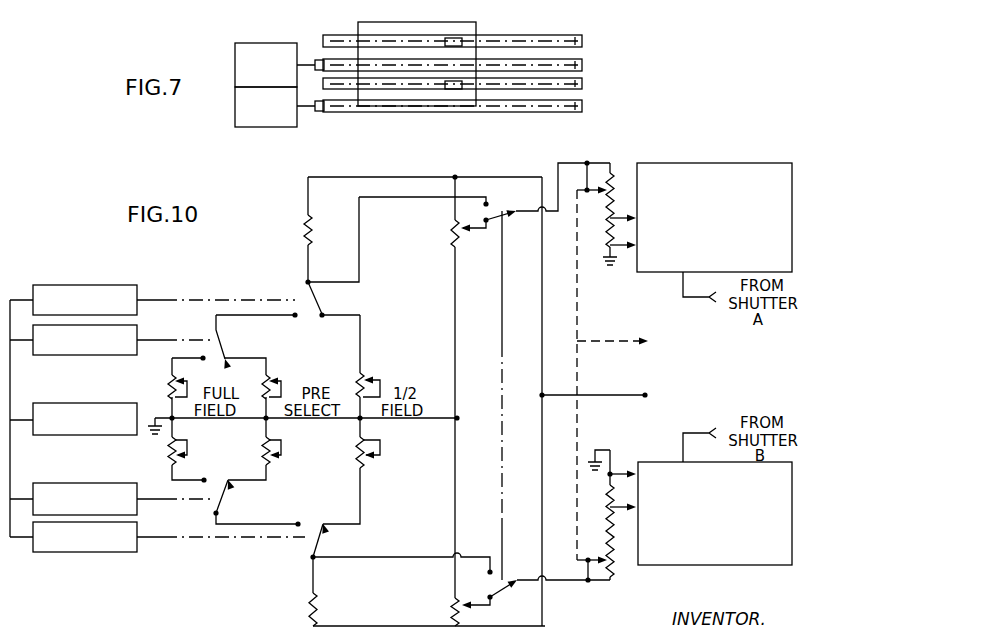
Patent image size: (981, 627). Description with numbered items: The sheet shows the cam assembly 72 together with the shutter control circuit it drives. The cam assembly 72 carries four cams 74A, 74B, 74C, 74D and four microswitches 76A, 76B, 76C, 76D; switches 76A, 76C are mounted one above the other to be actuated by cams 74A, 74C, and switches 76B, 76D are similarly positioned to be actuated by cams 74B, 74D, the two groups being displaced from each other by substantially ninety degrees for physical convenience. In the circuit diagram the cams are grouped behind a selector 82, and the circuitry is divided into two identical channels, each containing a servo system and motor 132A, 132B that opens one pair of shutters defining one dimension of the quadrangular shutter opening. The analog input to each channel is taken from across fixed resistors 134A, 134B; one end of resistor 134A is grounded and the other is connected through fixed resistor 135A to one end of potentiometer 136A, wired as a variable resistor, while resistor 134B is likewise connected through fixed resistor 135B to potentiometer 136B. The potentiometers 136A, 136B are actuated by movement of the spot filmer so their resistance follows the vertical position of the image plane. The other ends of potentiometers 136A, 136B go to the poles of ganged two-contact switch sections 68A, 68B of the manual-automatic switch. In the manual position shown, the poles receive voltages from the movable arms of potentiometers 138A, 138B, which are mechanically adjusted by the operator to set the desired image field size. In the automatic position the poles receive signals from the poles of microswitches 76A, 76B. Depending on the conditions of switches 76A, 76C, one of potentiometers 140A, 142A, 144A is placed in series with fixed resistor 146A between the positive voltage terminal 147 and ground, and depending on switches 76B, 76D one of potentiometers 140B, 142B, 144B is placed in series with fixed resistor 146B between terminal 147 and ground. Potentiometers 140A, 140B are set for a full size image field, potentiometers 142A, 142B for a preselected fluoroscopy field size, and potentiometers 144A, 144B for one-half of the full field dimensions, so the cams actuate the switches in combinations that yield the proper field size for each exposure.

In FIG. 7, the cam assembly 72 is at (533, 20).
In FIG. 10, the cam assembly 72 is at (199, 279).
In FIG. 7, the cam 74A is at (583, 43).
In FIG. 10, the cam 74A is at (64, 311).
In FIG. 7, the cam 74B is at (583, 67).
In FIG. 10, the cam 74B is at (64, 548).
In FIG. 7, the cam 74C is at (583, 86).
In FIG. 10, the cam 74C is at (64, 351).
In FIG. 7, the cam 74D is at (583, 108).
In FIG. 10, the cam 74D is at (64, 510).
In FIG. 7, the microswitch 76A is at (403, 22).
In FIG. 10, the microswitch 76A is at (315, 295).
In FIG. 7, the microswitch 76B is at (255, 43).
In FIG. 10, the microswitch 76B is at (318, 540).
In FIG. 7, the microswitch 76C is at (430, 107).
In FIG. 10, the microswitch 76C is at (222, 350).
In FIG. 7, the microswitch 76D is at (257, 127).
In FIG. 10, the microswitch 76D is at (224, 497).
In FIG. 10, the selector 82 is at (88, 403).
In FIG. 10, the two-contact switch section 68A is at (500, 214).
In FIG. 10, the two-contact switch section 68B is at (548, 600).
In FIG. 10, the servo system and motor 132A is at (693, 163).
In FIG. 10, the servo system and motor 132B is at (716, 576).
In FIG. 10, the fixed resistor 134A is at (618, 232).
In FIG. 10, the fixed resistor 134B is at (614, 492).
In FIG. 10, the fixed resistor 135A is at (603, 206).
In FIG. 10, the fixed resistor 135B is at (617, 517).
In FIG. 10, the potentiometer 136A is at (612, 180).
In FIG. 10, the potentiometer 136B is at (618, 568).
In FIG. 10, the potentiometer 138A is at (452, 230).
In FIG. 10, the potentiometer 138B is at (452, 607).
In FIG. 10, the potentiometer 140A is at (168, 386).
In FIG. 10, the potentiometer 140B is at (182, 460).
In FIG. 10, the potentiometer 142A is at (272, 380).
In FIG. 10, the potentiometer 142B is at (282, 460).
In FIG. 10, the potentiometer 144A is at (366, 376).
In FIG. 10, the potentiometer 144B is at (378, 460).
In FIG. 10, the fixed resistor 146A is at (305, 222).
In FIG. 10, the fixed resistor 146B is at (306, 612).
In FIG. 10, the terminal 147 is at (642, 392).